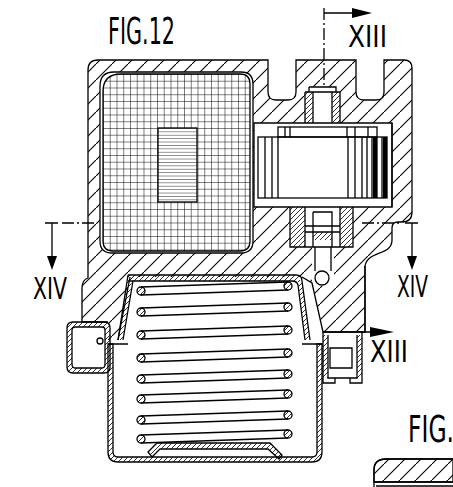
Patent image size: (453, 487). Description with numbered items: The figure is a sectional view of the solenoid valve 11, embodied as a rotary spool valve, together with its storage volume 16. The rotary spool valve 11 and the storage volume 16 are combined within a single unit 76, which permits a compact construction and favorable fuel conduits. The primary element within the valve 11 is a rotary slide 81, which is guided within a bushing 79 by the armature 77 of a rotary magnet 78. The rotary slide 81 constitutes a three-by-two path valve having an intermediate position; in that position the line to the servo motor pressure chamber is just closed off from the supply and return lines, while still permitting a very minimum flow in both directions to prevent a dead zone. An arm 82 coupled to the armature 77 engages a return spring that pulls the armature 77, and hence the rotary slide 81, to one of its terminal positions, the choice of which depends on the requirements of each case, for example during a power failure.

The solenoid valve 11 is at (372, 98).
The storage volume 16 is at (304, 405).
The single unit 76 is at (371, 299).
The armature 77 is at (370, 147).
The rotary magnet 78 is at (220, 97).
The bushing 79 is at (372, 212).
The rotary slide 81 is at (354, 266).
The arm 82 is at (396, 473).